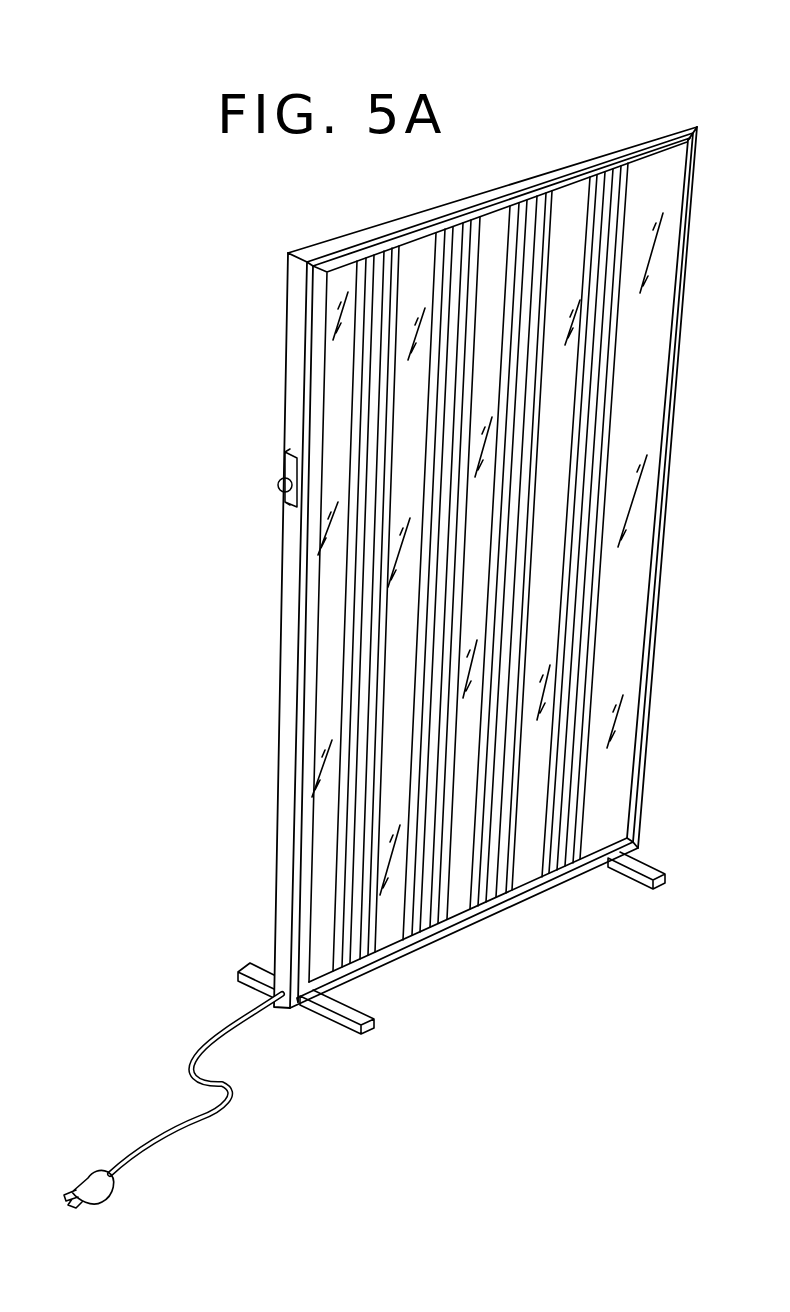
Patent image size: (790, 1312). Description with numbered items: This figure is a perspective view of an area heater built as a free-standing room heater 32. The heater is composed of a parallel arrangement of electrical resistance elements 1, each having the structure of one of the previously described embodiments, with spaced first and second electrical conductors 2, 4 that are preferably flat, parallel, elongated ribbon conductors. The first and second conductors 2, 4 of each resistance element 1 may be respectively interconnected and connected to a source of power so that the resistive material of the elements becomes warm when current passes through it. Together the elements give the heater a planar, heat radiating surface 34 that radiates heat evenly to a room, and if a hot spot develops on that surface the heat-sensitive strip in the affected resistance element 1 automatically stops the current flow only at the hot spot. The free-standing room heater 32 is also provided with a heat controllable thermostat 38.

The electrical resistance element 1 is at (377, 268).
The first electrical conductor 2 is at (358, 236).
The second electrical conductor 4 is at (400, 268).
The free-standing room heater 32 is at (262, 395).
The planar, heat radiating surface 34 is at (637, 576).
The heat controllable thermostat 38 is at (286, 482).